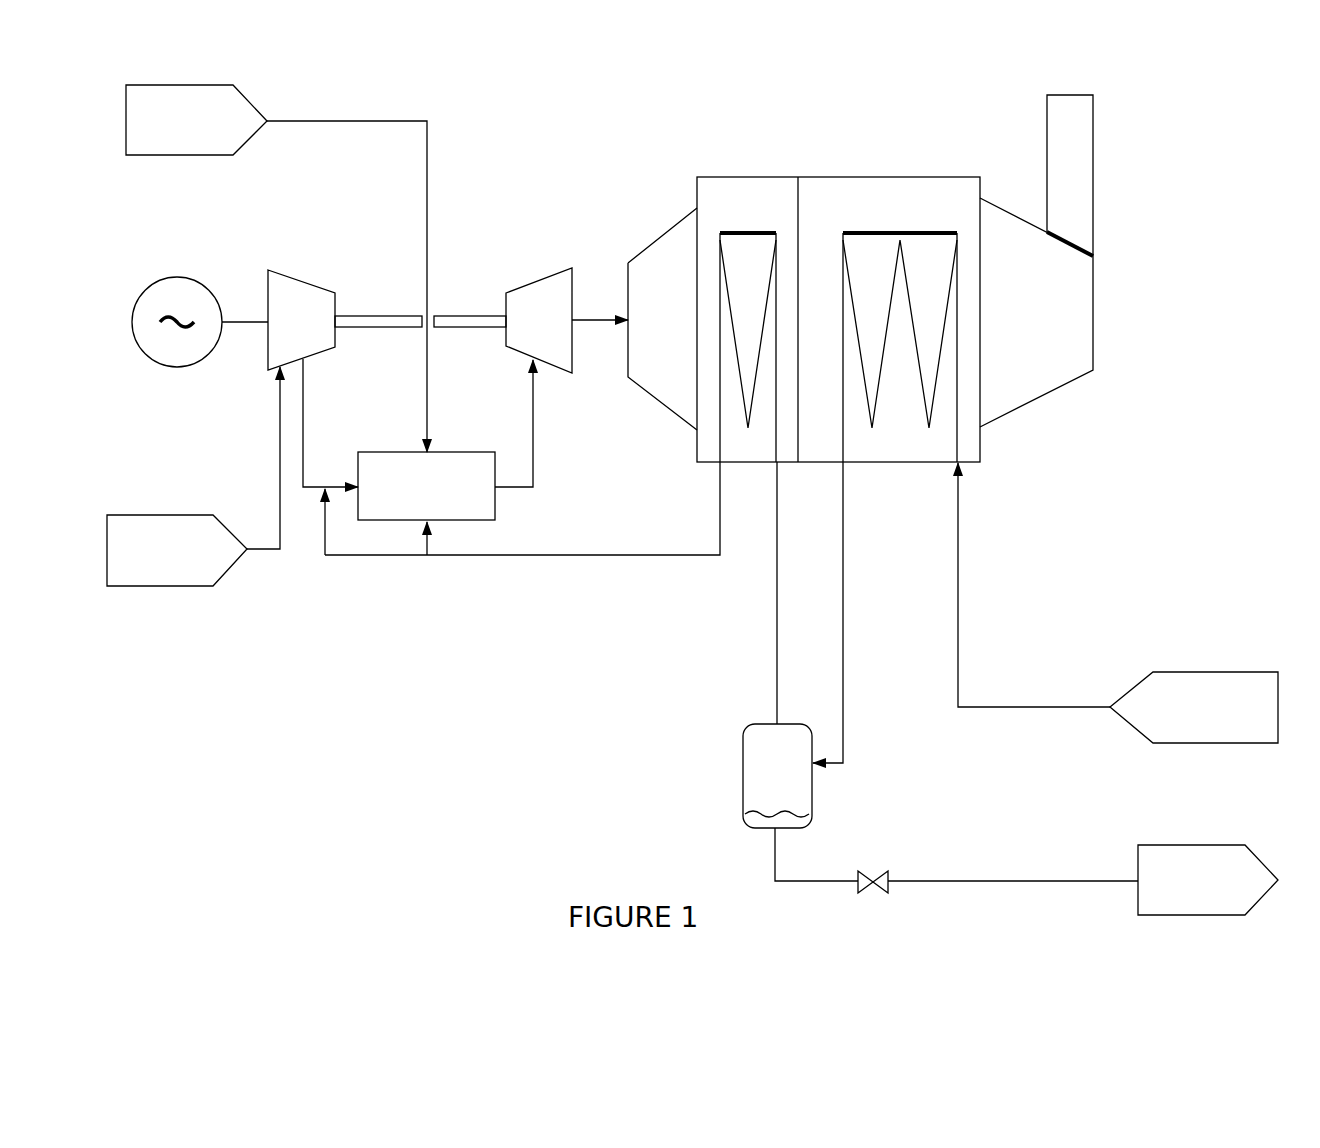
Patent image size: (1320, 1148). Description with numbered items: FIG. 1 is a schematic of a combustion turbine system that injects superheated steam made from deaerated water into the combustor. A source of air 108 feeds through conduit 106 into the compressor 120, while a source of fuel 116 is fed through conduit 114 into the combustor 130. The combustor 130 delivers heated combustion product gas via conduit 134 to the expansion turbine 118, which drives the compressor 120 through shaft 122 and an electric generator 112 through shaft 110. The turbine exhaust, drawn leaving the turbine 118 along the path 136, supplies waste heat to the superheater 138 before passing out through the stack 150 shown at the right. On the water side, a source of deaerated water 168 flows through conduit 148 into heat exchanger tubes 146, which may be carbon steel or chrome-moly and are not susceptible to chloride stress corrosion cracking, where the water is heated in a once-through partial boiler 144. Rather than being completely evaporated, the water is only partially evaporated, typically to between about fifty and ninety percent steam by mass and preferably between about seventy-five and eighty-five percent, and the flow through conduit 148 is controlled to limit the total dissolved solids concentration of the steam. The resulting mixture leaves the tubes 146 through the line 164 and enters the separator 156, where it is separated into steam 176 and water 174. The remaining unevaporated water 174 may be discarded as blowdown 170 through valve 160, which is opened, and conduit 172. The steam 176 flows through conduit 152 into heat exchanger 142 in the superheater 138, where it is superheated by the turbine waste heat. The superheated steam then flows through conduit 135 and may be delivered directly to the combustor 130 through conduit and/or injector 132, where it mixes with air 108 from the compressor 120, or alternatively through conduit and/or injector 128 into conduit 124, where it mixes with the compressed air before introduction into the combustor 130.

The conduit 106 is at (268, 483).
The source of air 108 is at (168, 507).
The shaft 110 is at (238, 328).
The electric generator 112 is at (170, 272).
The conduit 114 is at (437, 162).
The source of fuel 116 is at (242, 88).
The expansion turbine 118 is at (548, 268).
The compressor 120 is at (290, 263).
The shaft 122 is at (393, 308).
The conduit 124 is at (312, 417).
The conduit and/or injector 128 is at (323, 547).
The combustor 130 is at (445, 447).
The conduit and/or injector 132 is at (433, 545).
The conduit 134 is at (542, 440).
The conduit 135 is at (620, 567).
The turbine exhaust line 136 is at (607, 308).
The superheater 138 is at (730, 192).
The heat exchanger 142 is at (737, 265).
The once-through partial boiler 144 is at (930, 455).
The heat exchanger tubes 146 is at (857, 280).
The conduit 148 is at (968, 570).
The exhaust stack 150 is at (1087, 165).
The conduit 152 is at (787, 607).
The separator 156 is at (735, 758).
The valve 160 is at (878, 867).
The heated water line 164 is at (847, 632).
The source of deaerated water 168 is at (1200, 657).
The blowdown 170 is at (1208, 838).
The conduit 172 is at (952, 878).
The water 174 is at (758, 824).
The steam 176 is at (803, 802).